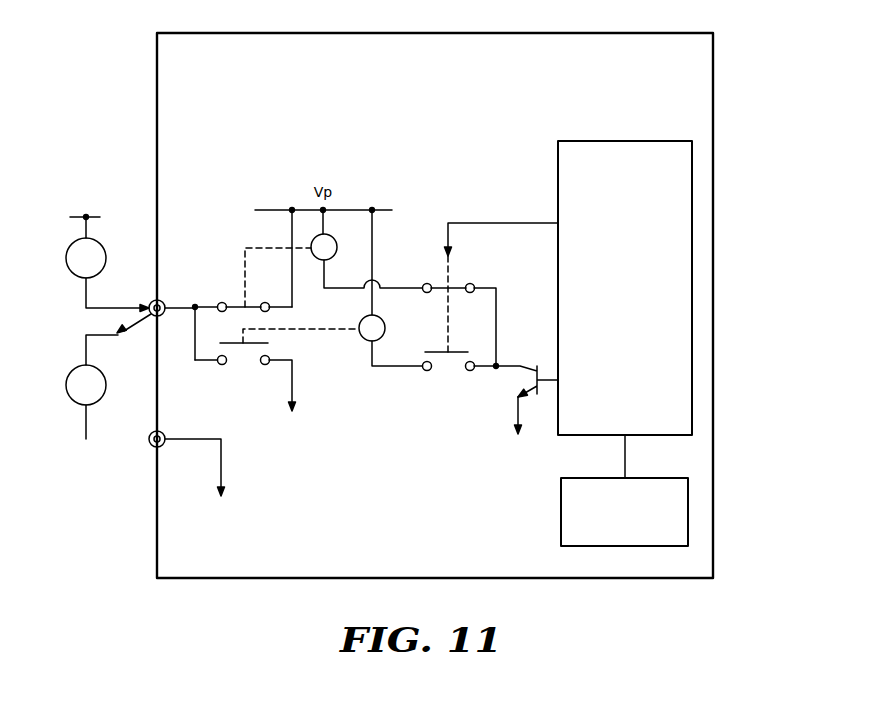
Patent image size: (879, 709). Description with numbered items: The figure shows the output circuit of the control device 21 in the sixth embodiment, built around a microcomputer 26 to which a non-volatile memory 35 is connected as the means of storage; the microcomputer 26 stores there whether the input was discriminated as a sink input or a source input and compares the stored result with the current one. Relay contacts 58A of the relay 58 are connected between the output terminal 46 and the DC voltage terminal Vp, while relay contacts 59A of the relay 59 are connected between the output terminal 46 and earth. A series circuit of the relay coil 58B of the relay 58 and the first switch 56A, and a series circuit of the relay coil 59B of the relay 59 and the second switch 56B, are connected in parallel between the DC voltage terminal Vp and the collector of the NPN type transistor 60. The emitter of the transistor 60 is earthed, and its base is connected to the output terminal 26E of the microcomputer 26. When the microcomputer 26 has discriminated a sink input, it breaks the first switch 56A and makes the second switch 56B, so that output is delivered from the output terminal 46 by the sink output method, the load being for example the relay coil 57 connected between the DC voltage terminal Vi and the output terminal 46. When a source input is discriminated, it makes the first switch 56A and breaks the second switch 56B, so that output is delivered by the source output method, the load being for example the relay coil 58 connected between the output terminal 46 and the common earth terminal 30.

The control device 21 is at (223, 580).
The microcomputer 26 is at (558, 178).
The output terminal of microcomputer 26E is at (556, 358).
The common earth terminal 30 is at (151, 447).
The non-volatile memory 35 is at (561, 518).
The output terminal 46 is at (152, 300).
The first switch 56A is at (453, 278).
The second switch 56B is at (445, 360).
The relay coil 57 is at (70, 248).
The relay 58 is at (70, 376).
The relay contacts 58A is at (227, 300).
The relay coil 58B is at (328, 235).
The relay 59 is at (277, 345).
The relay contacts 59A is at (246, 369).
The relay coil 59B is at (380, 338).
The NPN type transistor 60 is at (525, 408).